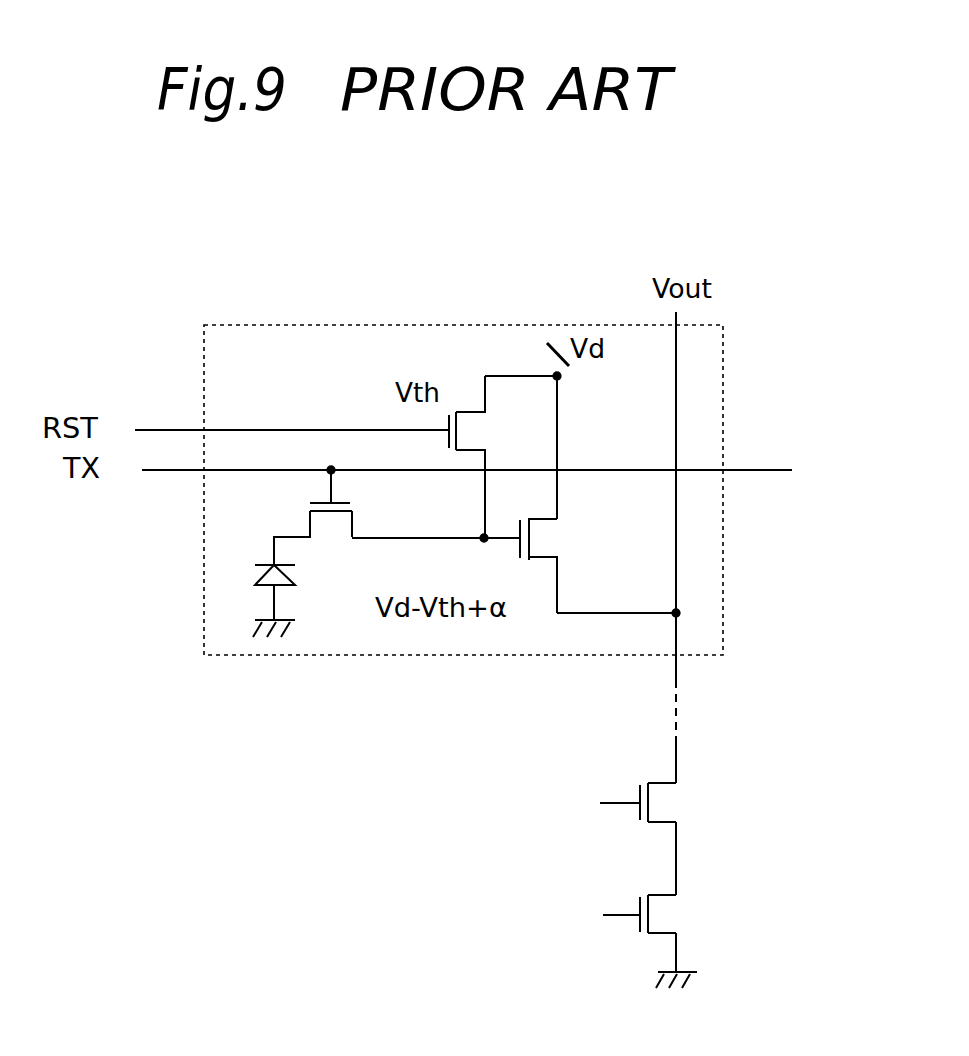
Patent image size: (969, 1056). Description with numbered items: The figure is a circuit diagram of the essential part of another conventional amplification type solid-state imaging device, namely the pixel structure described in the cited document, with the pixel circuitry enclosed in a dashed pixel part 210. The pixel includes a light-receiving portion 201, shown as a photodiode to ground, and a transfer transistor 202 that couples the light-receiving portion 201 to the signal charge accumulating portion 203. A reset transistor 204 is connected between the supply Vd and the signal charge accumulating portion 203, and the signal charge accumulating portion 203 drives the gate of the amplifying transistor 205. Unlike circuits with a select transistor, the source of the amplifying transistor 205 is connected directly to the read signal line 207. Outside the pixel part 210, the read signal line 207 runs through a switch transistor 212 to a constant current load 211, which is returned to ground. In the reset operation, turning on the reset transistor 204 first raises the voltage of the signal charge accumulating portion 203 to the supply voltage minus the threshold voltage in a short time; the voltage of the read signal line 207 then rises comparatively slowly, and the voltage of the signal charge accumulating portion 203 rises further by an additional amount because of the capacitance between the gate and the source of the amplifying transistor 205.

The light-receiving portion 201 is at (252, 570).
The transfer transistor 202 is at (332, 520).
The signal charge accumulating portion 203 is at (481, 536).
The reset transistor 204 is at (468, 430).
The amplifying transistor 205 is at (543, 540).
The read signal line 207 is at (676, 570).
The pixel part 210 is at (458, 323).
The constant current load 211 is at (665, 915).
The switch transistor 212 is at (665, 803).